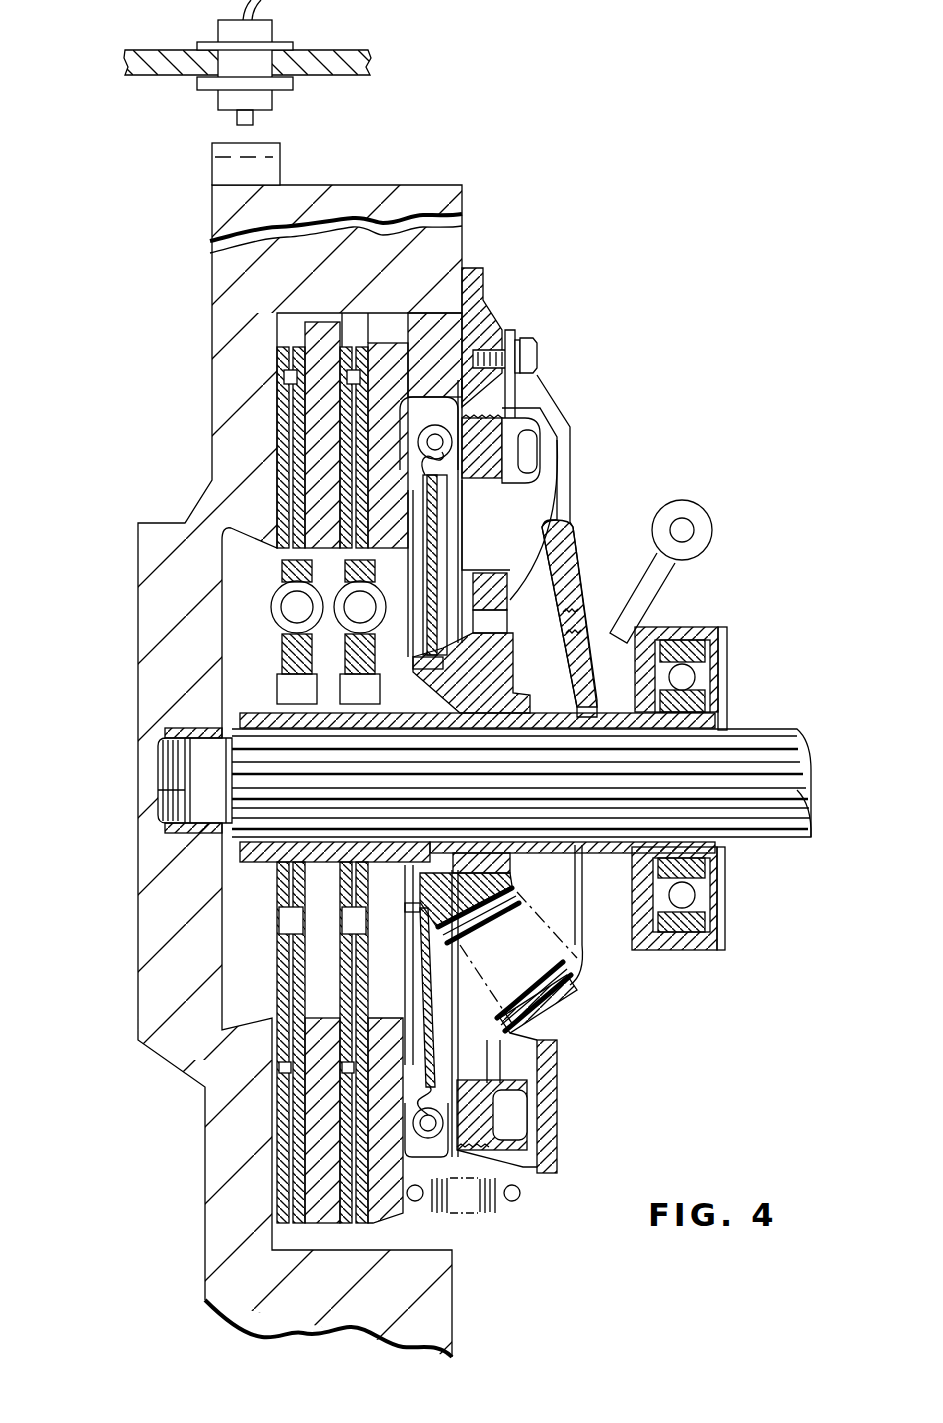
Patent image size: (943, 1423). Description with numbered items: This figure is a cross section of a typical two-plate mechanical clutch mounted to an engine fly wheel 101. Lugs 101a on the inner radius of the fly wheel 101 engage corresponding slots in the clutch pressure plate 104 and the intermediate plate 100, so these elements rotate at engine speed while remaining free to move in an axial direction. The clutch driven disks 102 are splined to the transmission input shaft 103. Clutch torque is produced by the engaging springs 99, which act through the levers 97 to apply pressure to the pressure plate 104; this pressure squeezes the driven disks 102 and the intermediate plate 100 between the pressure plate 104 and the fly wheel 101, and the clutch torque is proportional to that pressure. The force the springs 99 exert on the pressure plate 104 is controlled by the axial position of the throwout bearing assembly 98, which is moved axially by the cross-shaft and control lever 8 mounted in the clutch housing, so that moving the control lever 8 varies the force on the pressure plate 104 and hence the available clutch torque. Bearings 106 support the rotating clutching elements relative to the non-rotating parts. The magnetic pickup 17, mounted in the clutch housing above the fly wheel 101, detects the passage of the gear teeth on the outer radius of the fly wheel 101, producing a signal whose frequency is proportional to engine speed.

The magnetic pickup 17 is at (203, 29).
The engine fly wheel 101 is at (470, 240).
The lugs 101a is at (360, 333).
The intermediate plate 100 is at (330, 443).
The clutch driven disks 102 is at (282, 478).
The clutch pressure plate 104 is at (402, 372).
The levers 97 is at (442, 545).
The control lever 8 is at (708, 502).
The bearings 106 is at (672, 630).
The transmission input shaft 103 is at (750, 730).
The throwout bearing assembly 98 is at (706, 952).
The engaging springs 99 is at (574, 972).